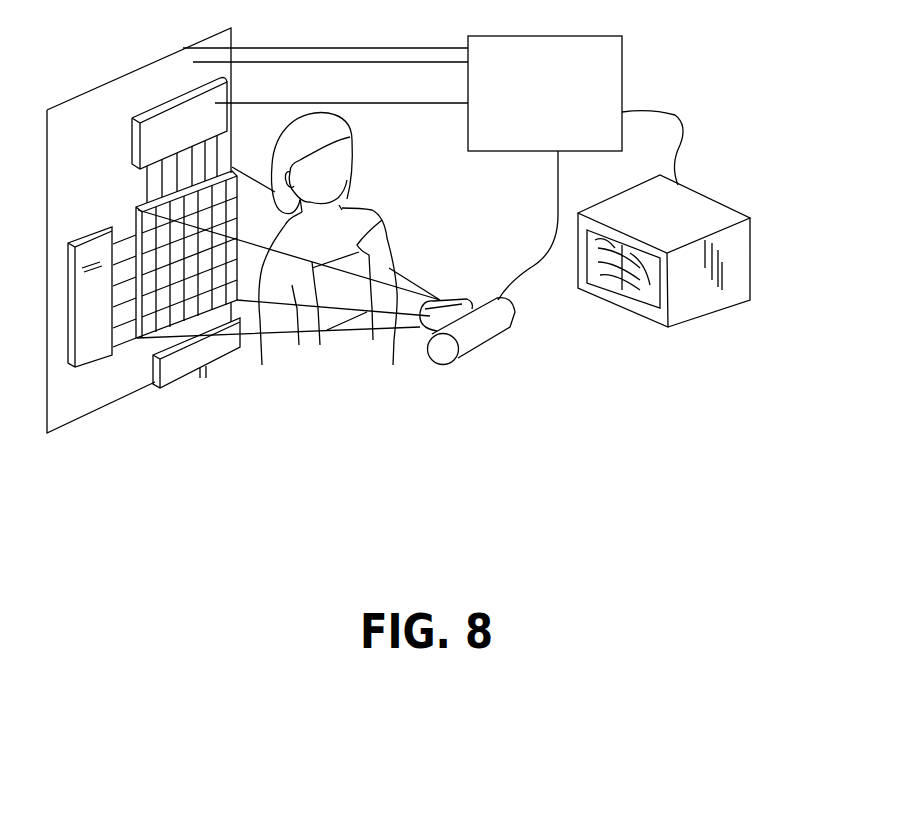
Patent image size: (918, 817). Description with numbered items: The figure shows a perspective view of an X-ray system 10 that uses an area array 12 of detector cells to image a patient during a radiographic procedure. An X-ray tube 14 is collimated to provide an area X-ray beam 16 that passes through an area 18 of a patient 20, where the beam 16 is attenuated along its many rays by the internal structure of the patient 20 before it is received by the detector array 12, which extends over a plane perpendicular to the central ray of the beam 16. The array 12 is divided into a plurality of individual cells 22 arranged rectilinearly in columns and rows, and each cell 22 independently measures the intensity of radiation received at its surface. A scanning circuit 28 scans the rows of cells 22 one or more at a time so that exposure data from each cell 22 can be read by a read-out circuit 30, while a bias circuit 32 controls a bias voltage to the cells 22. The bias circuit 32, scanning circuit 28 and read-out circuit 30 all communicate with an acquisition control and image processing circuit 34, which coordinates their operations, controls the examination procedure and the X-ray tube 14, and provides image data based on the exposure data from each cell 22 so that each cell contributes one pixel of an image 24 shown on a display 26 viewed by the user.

The X-ray system 10 is at (722, 86).
The area array 12 is at (228, 165).
The X-ray tube 14 is at (505, 327).
The area X-ray beam 16 is at (412, 280).
The area of a patient 18 is at (370, 223).
The patient 20 is at (358, 207).
The cells 22 is at (162, 200).
The image 24 is at (630, 297).
The display 26 is at (703, 212).
The scanning circuit 28 is at (93, 352).
The read-out circuit 30 is at (163, 120).
The bias circuit 32 is at (187, 365).
The acquisition control and image processing circuit 34 is at (623, 73).